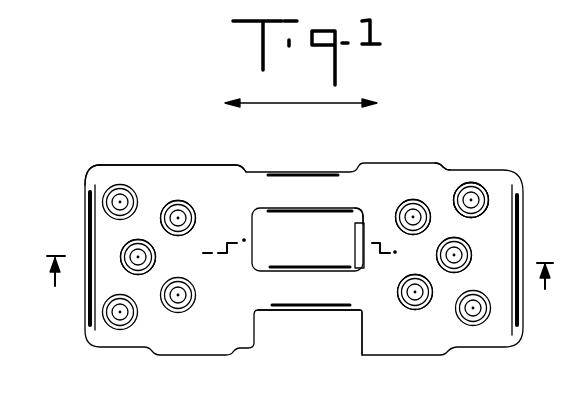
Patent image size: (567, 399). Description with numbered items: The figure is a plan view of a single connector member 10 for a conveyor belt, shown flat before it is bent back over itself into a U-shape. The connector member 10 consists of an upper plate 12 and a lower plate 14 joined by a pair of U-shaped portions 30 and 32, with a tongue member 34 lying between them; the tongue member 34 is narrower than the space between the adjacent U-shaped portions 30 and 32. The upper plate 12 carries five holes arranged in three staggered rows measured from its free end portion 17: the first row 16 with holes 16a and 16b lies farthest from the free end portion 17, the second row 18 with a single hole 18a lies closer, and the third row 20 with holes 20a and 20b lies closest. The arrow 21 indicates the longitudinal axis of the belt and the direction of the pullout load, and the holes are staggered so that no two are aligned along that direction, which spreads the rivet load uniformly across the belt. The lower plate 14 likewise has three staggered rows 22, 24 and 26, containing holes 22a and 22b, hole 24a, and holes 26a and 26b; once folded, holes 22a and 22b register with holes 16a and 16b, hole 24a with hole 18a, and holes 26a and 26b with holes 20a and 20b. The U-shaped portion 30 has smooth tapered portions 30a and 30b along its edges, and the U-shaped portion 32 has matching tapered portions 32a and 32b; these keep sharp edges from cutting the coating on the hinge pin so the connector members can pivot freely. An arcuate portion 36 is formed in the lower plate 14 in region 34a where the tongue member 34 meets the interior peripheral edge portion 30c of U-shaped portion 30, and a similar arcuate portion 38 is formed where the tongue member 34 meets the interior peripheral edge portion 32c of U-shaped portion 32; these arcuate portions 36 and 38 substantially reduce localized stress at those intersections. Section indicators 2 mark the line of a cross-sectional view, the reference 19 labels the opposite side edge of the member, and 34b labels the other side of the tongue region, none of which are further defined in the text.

The section line 2- 2 is at (300, 260).
The connector member 10 is at (321, 155).
The upper plate 12 is at (173, 184).
The lower plate 14 is at (418, 167).
The first row of holes 16 is at (192, 201).
The hole 16a is at (198, 210).
The hole 16b is at (195, 298).
The free end portion 17 is at (86, 213).
The second row of holes 18 is at (147, 235).
The hole 18a is at (124, 268).
The right side edge 19 is at (523, 297).
The third row of holes 20 is at (121, 186).
The hole 20a is at (88, 181).
The hole 20b is at (107, 318).
The arrow 21 is at (295, 104).
The row of holes 22 is at (431, 192).
The hole 22a is at (432, 221).
The hole 22b is at (433, 286).
The row of holes 24 is at (474, 233).
The hole 24a is at (470, 246).
The row of holes 26 is at (492, 182).
The hole 26a is at (490, 198).
The hole 26b is at (487, 318).
The U-shaped portion 30 is at (263, 185).
The tapered portion 30a is at (294, 173).
The tapered portion 30b is at (310, 228).
The interior peripheral edge portion 30c is at (352, 208).
The U-shaped portion 32 is at (301, 296).
The tapered portion 32a is at (330, 304).
The tapered portion 32b is at (298, 270).
The interior peripheral edge portion 32c is at (344, 298).
The tongue member 34 is at (354, 250).
The region 34a is at (410, 204).
The hole 34b is at (380, 251).
The arcuate portion 36 is at (363, 213).
The arcuate portion 38 is at (358, 269).